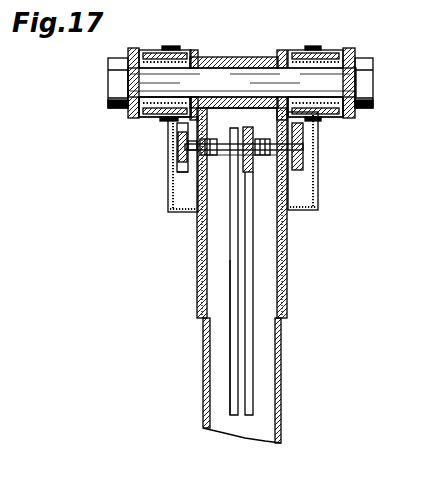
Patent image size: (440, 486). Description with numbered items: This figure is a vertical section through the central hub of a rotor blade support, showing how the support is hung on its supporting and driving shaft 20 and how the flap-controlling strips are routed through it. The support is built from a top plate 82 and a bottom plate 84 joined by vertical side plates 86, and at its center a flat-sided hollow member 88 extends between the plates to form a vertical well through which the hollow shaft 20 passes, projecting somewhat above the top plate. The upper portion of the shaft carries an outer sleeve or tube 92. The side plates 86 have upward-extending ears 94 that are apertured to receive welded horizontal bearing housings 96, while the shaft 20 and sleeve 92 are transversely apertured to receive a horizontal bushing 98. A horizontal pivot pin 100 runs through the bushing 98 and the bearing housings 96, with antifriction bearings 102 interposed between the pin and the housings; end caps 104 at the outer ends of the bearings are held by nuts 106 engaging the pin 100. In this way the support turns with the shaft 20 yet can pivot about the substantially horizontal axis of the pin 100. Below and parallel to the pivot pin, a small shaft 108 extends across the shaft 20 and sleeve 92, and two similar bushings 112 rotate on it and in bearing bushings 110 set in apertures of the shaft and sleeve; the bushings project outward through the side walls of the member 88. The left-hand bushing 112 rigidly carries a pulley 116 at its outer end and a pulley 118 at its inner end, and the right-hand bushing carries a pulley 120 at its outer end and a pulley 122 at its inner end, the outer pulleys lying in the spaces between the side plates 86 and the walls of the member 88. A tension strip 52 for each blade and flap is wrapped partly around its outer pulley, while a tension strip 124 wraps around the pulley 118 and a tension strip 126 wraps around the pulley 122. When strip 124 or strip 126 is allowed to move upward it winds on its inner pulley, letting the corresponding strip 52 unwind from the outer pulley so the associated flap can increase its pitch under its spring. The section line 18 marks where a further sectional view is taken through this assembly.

The section line 18 is at (190, 24).
The supporting and driving shaft 20 is at (282, 398).
The tension strip 52 is at (183, 175).
The top plate 82 is at (182, 126).
The bottom plate 84 is at (322, 212).
The vertical plate 86 is at (168, 208).
The flat-sided hollow member 88 is at (190, 197).
The outer sleeve or tube 92 is at (286, 280).
The ear 94 is at (168, 50).
The bearing housing 96 is at (150, 50).
The horizontal bushing 98 is at (250, 60).
The horizontal pivot pin 100 is at (212, 75).
The antifriction bearing 102 is at (152, 116).
The end cap 104 is at (132, 52).
The nut 106 is at (110, 77).
The small shaft 108 is at (304, 148).
The bearing bushing 110 is at (245, 174).
The bushing 112 is at (239, 138).
The pulley 116 is at (178, 150).
The pulley 118 is at (232, 264).
The pulley 120 is at (304, 166).
The pulley 122 is at (243, 130).
The tension strip 124 is at (232, 256).
The tension strip 126 is at (247, 258).